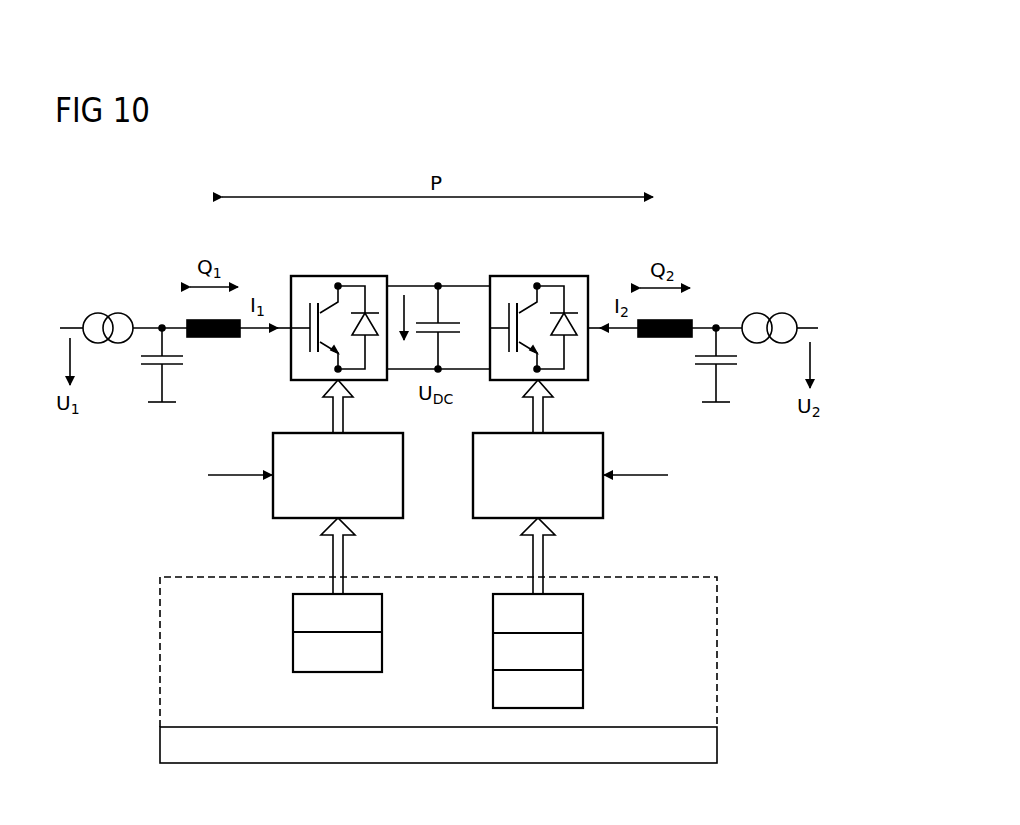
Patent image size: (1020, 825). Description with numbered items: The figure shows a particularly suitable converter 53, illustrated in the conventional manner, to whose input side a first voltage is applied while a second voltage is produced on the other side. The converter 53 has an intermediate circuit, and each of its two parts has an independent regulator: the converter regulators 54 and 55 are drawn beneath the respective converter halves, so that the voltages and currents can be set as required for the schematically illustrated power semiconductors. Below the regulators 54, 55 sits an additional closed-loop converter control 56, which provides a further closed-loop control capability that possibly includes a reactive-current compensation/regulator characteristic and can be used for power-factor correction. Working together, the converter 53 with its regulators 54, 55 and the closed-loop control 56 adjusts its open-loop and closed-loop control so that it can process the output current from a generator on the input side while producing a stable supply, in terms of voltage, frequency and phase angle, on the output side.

The converter 53 is at (524, 276).
The converter regulator 54 is at (273, 500).
The converter regulator 55 is at (603, 500).
The additional closed-loop converter control 56 is at (717, 668).